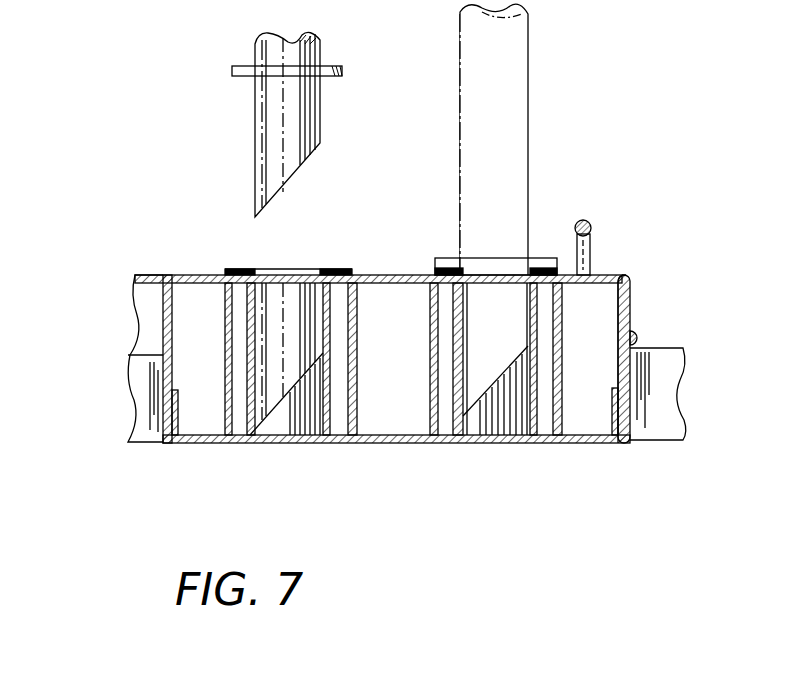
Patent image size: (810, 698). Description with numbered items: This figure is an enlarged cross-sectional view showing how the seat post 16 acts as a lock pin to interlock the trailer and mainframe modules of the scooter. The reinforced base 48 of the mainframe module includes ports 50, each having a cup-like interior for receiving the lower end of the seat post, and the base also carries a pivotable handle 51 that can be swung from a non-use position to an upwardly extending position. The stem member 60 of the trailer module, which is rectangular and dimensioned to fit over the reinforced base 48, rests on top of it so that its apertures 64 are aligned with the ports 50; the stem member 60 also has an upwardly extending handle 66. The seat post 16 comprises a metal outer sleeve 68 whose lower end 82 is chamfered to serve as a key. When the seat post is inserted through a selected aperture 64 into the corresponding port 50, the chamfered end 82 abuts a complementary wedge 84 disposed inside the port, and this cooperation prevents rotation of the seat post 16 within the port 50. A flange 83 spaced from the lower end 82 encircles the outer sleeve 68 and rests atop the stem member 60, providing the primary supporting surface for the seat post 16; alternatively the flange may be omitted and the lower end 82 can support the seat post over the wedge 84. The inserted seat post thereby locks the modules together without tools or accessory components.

The seat post 16 is at (228, 120).
The reinforced base 48 is at (146, 312).
The port 50 is at (306, 328).
The handle 51 is at (640, 338).
The stem member 60 is at (170, 283).
The aperture 64 is at (282, 290).
The handle 66 is at (592, 230).
The outer sleeve 68 is at (320, 122).
The lower end 82 is at (298, 166).
The flange 83 is at (342, 66).
The wedge 84 is at (278, 420).